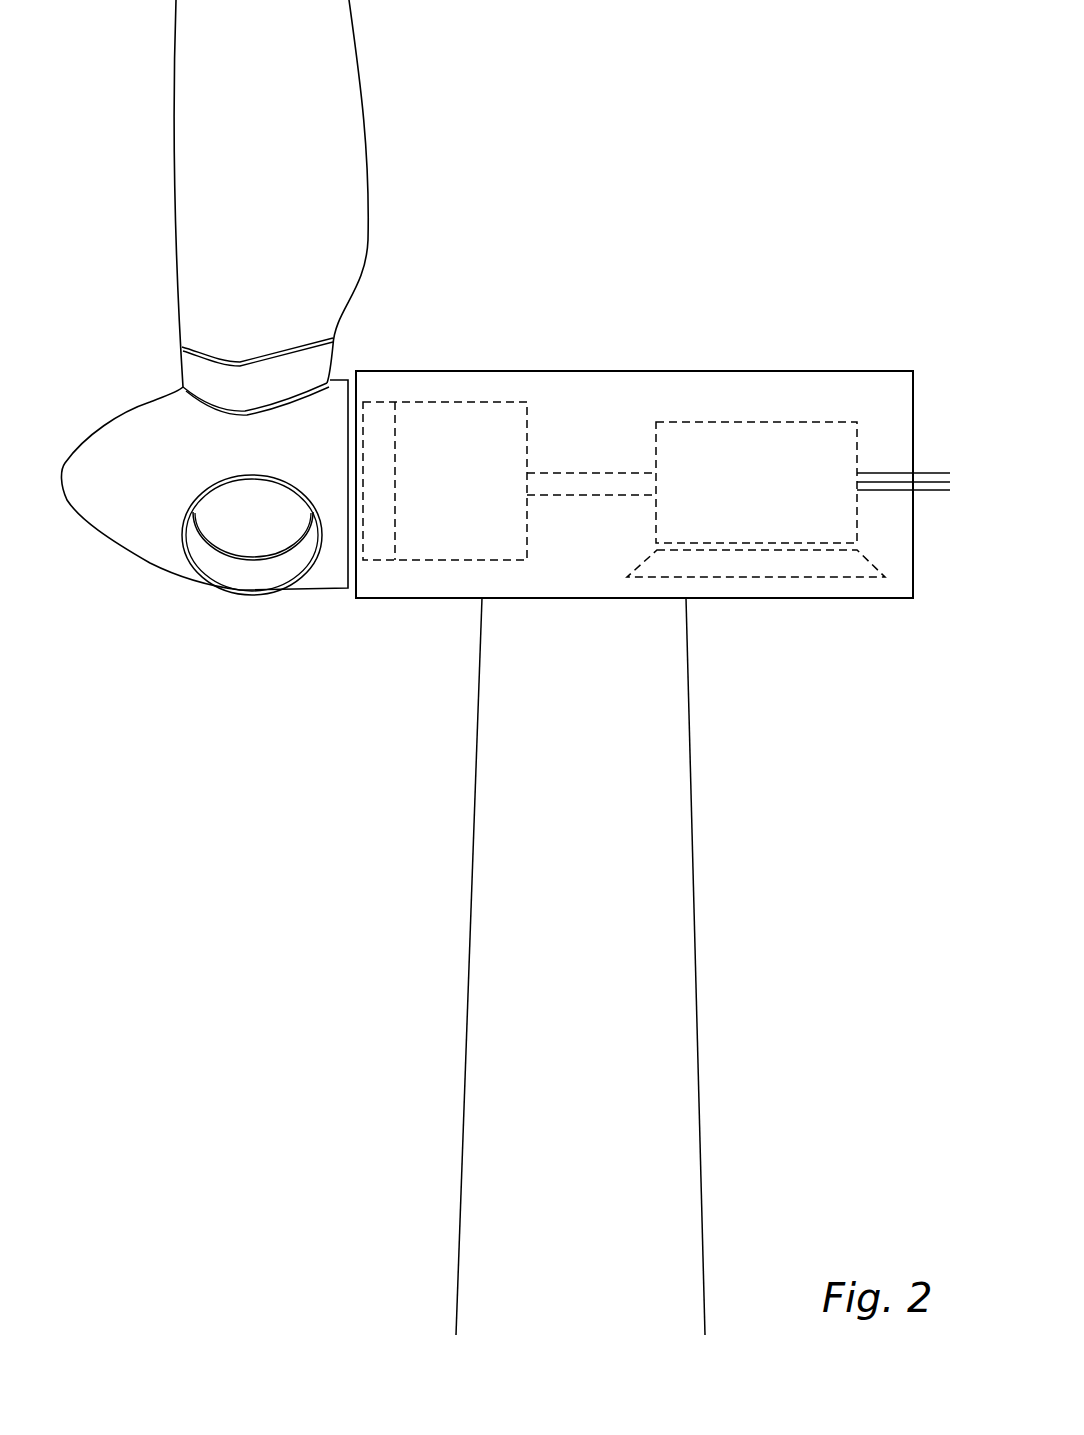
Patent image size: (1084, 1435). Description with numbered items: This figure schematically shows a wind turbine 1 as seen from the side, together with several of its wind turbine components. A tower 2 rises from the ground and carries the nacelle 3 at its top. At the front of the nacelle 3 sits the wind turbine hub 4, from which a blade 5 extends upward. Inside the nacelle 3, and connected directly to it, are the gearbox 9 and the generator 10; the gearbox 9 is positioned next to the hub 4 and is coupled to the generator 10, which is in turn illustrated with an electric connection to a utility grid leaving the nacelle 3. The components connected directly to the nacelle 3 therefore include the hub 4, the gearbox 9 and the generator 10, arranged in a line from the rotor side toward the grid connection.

The wind turbine 1 is at (358, 1121).
The tower 2 is at (668, 930).
The nacelle 3 is at (618, 385).
The wind turbine hub 4 is at (142, 533).
The rotor blade 5 is at (342, 199).
The gearbox 9 is at (470, 415).
The generator 10 is at (762, 433).